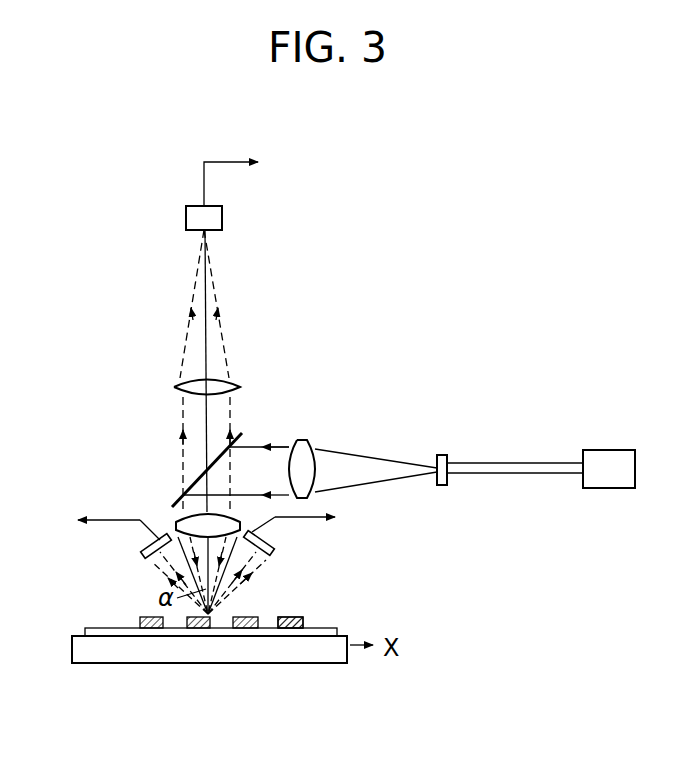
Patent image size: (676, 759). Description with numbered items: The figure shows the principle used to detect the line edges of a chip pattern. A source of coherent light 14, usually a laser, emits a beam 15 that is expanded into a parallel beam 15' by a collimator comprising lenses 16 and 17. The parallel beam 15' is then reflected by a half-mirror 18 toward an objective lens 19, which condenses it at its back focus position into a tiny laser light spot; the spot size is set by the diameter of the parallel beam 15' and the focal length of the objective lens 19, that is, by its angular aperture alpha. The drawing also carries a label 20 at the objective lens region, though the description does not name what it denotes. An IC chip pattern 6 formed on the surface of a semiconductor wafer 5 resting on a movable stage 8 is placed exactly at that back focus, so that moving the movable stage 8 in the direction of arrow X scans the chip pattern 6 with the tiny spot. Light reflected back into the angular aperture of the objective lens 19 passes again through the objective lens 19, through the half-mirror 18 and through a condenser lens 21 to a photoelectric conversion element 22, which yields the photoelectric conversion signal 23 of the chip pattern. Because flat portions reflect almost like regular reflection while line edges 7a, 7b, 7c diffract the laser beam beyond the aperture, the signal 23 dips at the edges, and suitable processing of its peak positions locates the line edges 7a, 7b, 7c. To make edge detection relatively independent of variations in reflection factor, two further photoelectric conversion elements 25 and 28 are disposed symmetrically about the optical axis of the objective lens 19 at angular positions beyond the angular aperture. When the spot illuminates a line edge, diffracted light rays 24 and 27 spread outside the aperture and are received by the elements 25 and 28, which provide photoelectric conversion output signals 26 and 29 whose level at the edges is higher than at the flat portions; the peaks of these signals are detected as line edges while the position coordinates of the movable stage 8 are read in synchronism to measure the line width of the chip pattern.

The semiconductor wafer 5 is at (326, 631).
The IC chip pattern 6 is at (150, 617).
The line edge 7a is at (304, 620).
The line edge 7b is at (278, 617).
The line edge 7c is at (258, 617).
The movable stage 8 is at (72, 653).
The source of coherent light 14 is at (607, 450).
The beam 15 is at (515, 439).
The parallel beam 15' is at (289, 413).
The collimator lens 16 is at (441, 455).
The collimator lens 17 is at (303, 440).
The half-mirror 18 is at (242, 433).
The objective lens 19 is at (172, 520).
The illuminating light 20 is at (226, 526).
The condenser lens 21 is at (174, 387).
The photoelectric conversion element 22 is at (212, 218).
The photoelectric conversion signal 23 is at (228, 162).
The diffracted light rays 24 is at (268, 571).
The photoelectric conversion element 25 is at (272, 546).
The photoelectric conversion output signal 26 is at (313, 517).
The diffracted light rays 27 is at (150, 566).
The photoelectric conversion element 28 is at (143, 549).
The photoelectric conversion output signal 29 is at (103, 520).